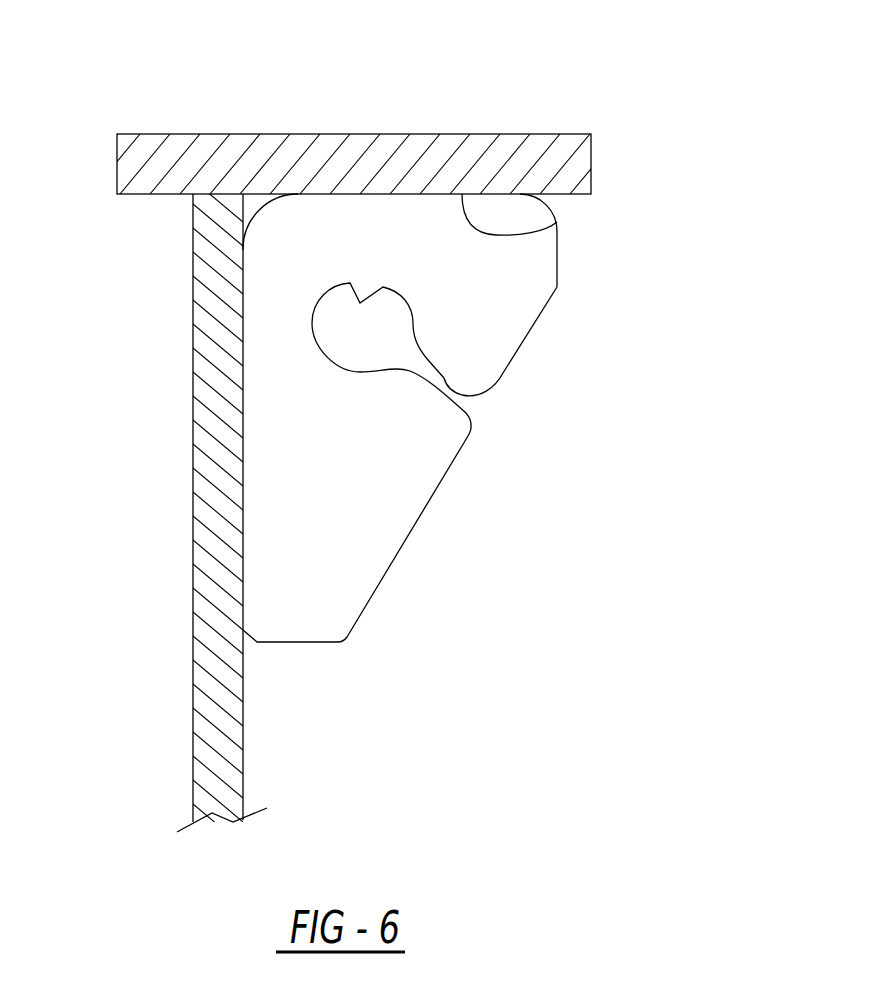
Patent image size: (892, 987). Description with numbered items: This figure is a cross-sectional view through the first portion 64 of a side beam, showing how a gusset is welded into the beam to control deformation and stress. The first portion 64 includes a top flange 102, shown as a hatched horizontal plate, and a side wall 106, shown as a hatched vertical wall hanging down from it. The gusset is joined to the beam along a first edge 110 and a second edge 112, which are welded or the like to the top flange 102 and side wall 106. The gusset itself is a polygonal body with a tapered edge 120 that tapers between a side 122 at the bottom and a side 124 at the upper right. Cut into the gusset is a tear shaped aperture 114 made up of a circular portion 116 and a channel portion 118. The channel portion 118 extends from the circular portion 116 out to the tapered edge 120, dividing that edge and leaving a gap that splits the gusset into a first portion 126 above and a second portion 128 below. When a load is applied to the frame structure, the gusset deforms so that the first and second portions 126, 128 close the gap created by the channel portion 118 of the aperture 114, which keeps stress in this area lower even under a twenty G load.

The top flange 102 is at (455, 158).
The side wall 106 is at (222, 522).
The first portion 64 is at (212, 658).
The first edge 110 is at (243, 412).
The second edge 112 is at (557, 224).
The side 124 is at (557, 245).
The first portion of the gusset 126 is at (500, 340).
The circular portion 116 is at (348, 283).
The second portion of the gusset 128 is at (415, 444).
The tapered edge 120 is at (403, 548).
The side 122 is at (312, 642).
The channel portion 118 is at (446, 380).
The tear shaped aperture 114 is at (483, 415).